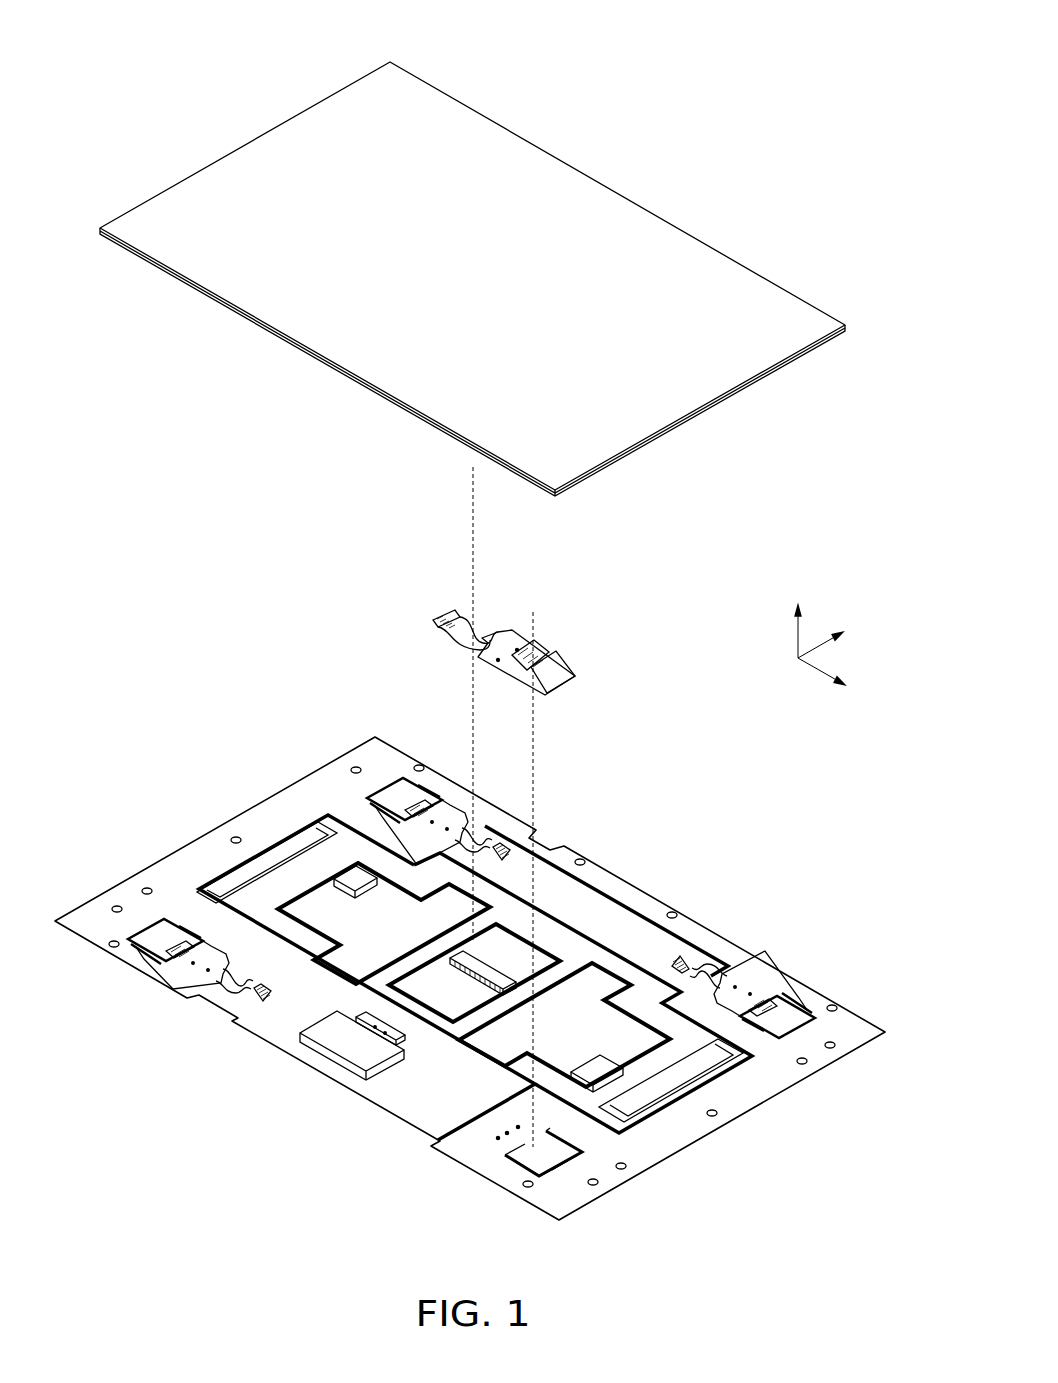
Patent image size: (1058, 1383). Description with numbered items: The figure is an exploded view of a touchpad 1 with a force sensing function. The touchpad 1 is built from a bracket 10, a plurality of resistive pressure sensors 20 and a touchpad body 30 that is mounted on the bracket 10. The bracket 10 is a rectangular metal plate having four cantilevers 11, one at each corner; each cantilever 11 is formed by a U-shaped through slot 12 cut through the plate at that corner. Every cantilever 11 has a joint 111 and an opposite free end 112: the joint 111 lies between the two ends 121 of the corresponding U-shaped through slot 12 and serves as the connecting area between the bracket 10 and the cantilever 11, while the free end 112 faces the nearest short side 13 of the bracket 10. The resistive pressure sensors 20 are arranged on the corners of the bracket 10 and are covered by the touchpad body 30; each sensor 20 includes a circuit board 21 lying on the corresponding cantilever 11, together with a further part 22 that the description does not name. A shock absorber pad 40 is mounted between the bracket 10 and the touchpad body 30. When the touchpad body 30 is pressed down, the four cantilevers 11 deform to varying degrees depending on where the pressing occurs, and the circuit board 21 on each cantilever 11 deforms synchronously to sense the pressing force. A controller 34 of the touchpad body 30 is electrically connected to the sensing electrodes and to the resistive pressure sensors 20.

The touchpad 1 is at (470, 638).
The bracket 10 is at (717, 943).
The cantilever 11 is at (543, 1155).
The joint 111 is at (525, 1143).
The free end 112 is at (560, 1155).
The U-shaped through slot 12 is at (553, 1170).
The end of U-shaped through slot 121 is at (500, 1132).
The short side 13 is at (258, 803).
The resistive pressure sensor 20 is at (471, 802).
The circuit board 21 is at (497, 642).
The connector 22 is at (530, 643).
The touchpad body 30 is at (765, 293).
The controller 34 is at (343, 1040).
The shock absorber pad 40 is at (555, 677).